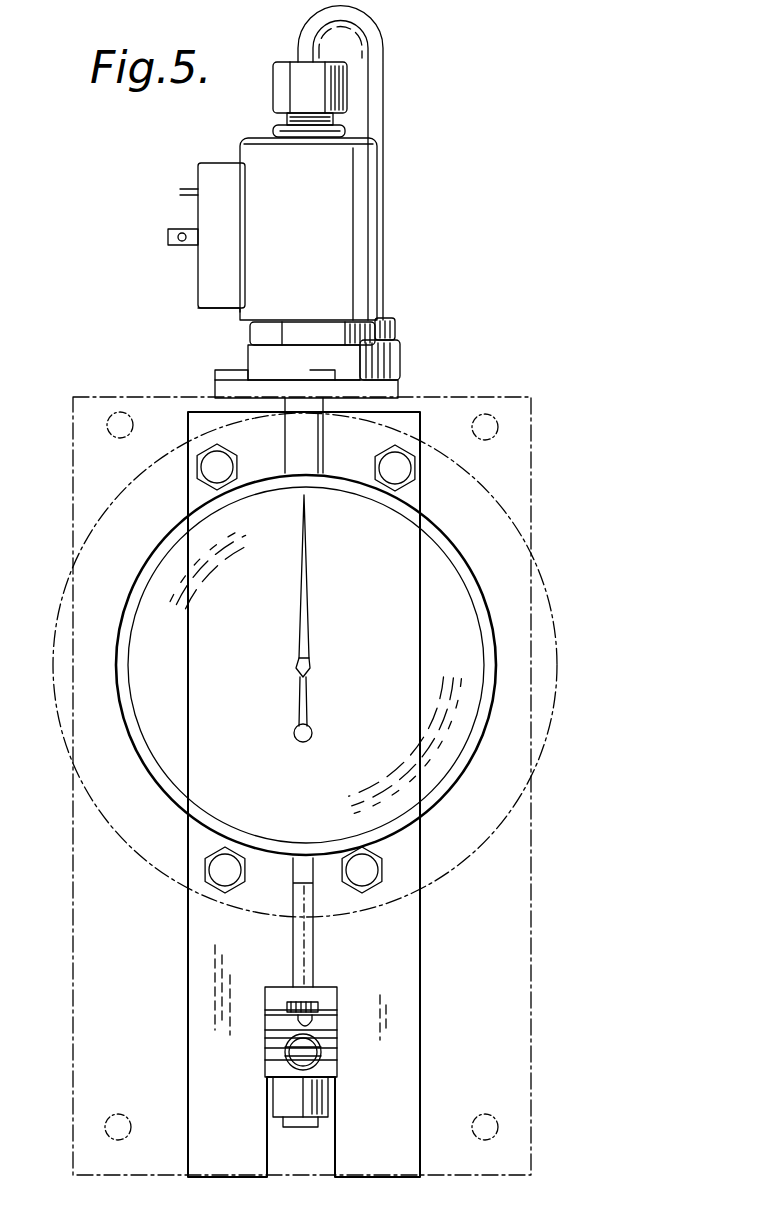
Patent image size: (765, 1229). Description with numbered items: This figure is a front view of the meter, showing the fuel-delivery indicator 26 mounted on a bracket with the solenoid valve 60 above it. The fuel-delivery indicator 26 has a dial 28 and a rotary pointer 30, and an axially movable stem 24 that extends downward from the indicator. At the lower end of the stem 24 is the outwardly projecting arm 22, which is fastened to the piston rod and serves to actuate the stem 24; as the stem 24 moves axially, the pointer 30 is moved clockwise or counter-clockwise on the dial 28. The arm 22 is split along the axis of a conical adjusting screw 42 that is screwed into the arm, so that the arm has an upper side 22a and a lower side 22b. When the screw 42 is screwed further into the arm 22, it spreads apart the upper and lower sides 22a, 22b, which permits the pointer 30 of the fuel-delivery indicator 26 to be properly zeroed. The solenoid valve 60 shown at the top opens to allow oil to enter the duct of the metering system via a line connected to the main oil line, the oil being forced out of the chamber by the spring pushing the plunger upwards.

The solenoid valve 60 is at (352, 240).
The fuel-delivery indicator 26 is at (140, 562).
The dial 28 is at (153, 748).
The rotary pointer 30 is at (309, 612).
The stem 24 is at (305, 953).
The arm 22 is at (304, 1048).
The upper side of arm 22a is at (320, 1038).
The lower side of arm 22b is at (320, 1059).
The conical adjusting screw 42 is at (288, 1060).